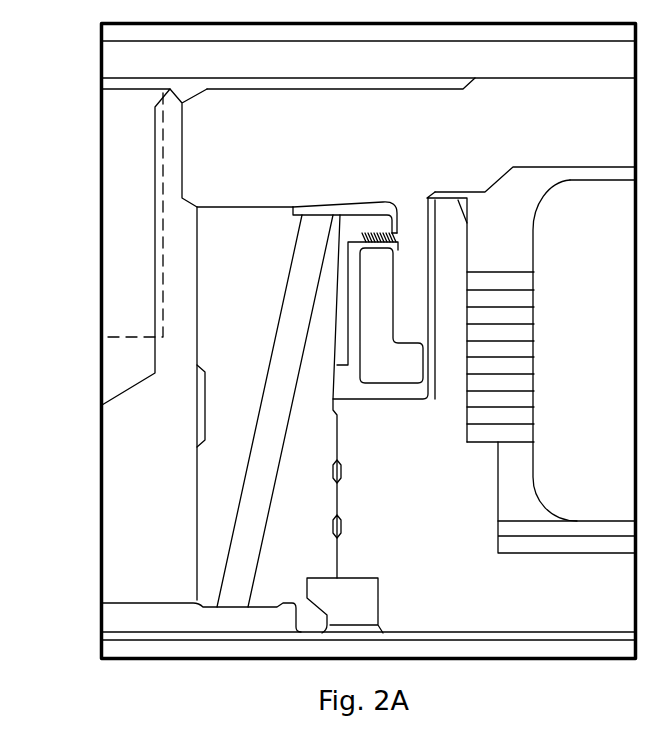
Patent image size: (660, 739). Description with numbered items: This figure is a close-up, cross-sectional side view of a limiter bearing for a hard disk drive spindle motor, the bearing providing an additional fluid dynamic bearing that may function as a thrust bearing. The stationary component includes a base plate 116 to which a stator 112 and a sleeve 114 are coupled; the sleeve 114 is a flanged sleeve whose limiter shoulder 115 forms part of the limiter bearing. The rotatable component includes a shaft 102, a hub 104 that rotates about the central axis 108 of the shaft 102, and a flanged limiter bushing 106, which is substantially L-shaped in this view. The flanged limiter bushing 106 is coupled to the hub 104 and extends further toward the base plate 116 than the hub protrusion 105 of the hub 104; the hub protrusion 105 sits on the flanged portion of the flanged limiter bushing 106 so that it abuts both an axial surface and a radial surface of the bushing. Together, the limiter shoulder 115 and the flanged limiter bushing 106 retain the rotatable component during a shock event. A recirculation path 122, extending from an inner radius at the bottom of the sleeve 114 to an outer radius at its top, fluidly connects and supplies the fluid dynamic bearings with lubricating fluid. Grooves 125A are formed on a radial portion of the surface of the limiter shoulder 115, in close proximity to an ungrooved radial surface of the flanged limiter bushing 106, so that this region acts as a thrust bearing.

The shaft 102 is at (169, 557).
The hub 104 is at (617, 132).
The hub protrusion 105 is at (408, 253).
The flanged limiter bushing 106 is at (410, 376).
The central axis 108 is at (103, 217).
The stator 112 is at (605, 367).
The sleeve 114 is at (262, 246).
The limiter shoulder 115 is at (397, 233).
The base plate 116 is at (587, 606).
The recirculation path 122 is at (270, 412).
The grooves 125A is at (413, 282).